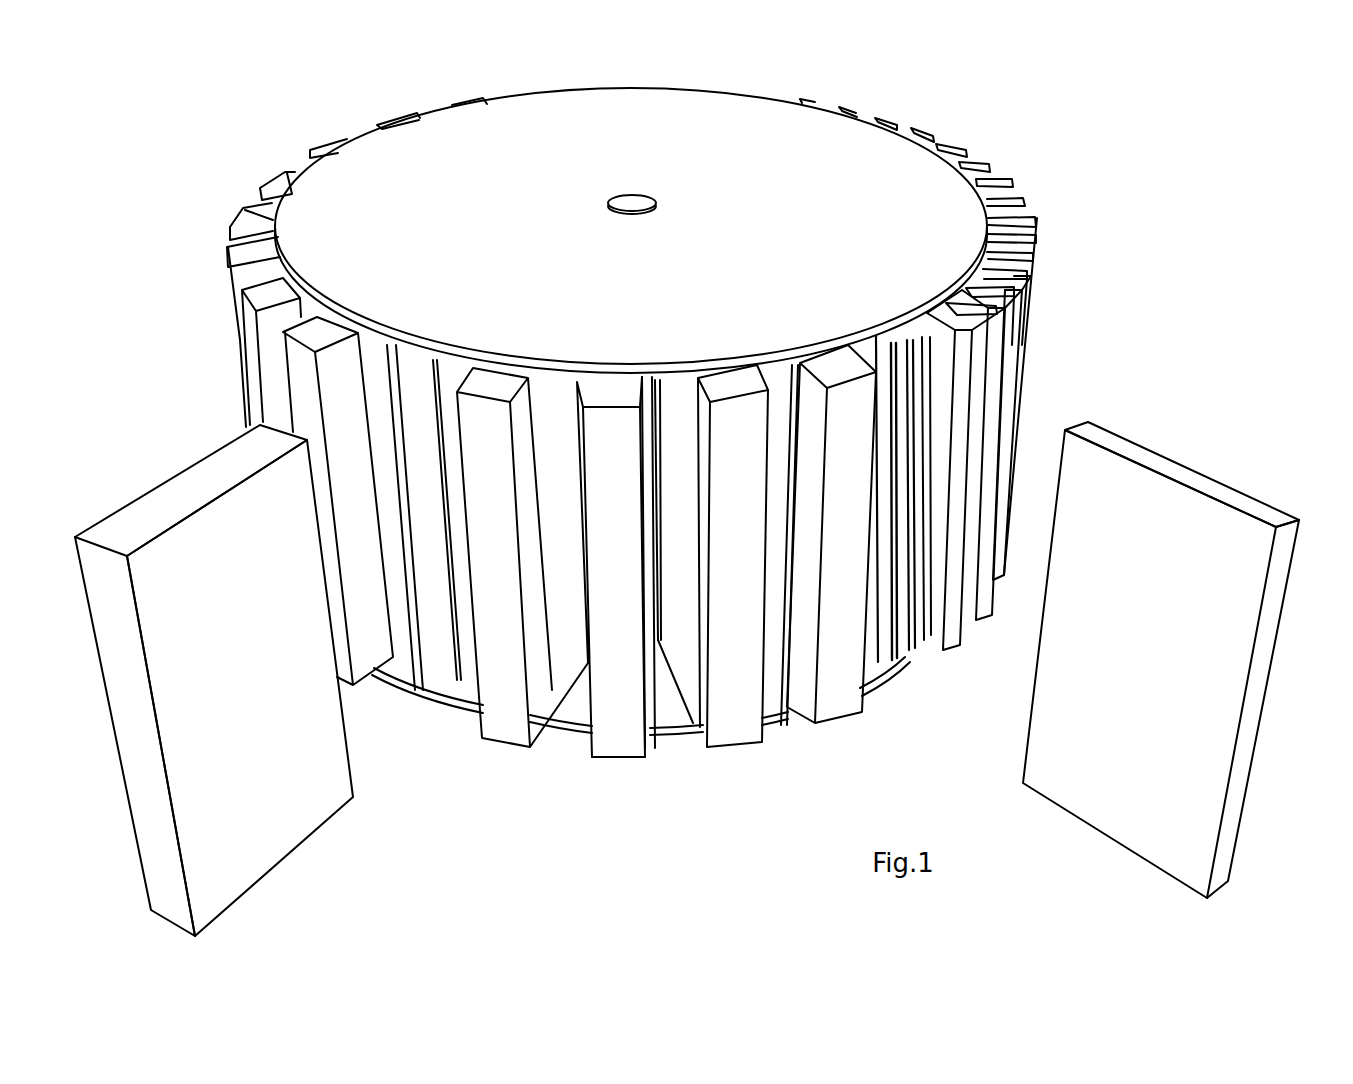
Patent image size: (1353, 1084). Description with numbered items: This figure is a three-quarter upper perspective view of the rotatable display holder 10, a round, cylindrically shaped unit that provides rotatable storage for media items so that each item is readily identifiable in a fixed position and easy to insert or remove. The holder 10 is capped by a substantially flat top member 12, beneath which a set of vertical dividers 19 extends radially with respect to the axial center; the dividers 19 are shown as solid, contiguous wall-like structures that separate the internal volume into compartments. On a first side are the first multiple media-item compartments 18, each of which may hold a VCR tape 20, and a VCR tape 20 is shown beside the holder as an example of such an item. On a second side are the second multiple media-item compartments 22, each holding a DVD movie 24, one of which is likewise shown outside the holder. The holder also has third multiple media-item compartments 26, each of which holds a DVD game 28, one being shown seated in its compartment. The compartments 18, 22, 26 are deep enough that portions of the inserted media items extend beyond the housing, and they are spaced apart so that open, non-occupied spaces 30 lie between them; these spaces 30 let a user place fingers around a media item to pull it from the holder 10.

The rotatable holder 10 is at (168, 155).
The top member 12 is at (810, 167).
The first multiple media-item compartments 18 is at (441, 606).
The vertical dividers 19 is at (549, 688).
The VCR tape 20 is at (295, 803).
The second multiple media-item compartments 22 is at (893, 357).
The DVD movie 24 is at (1114, 808).
The third multiple media-item compartments 26 is at (912, 398).
The DVD game 28 is at (917, 662).
The open spaces 30 is at (672, 699).